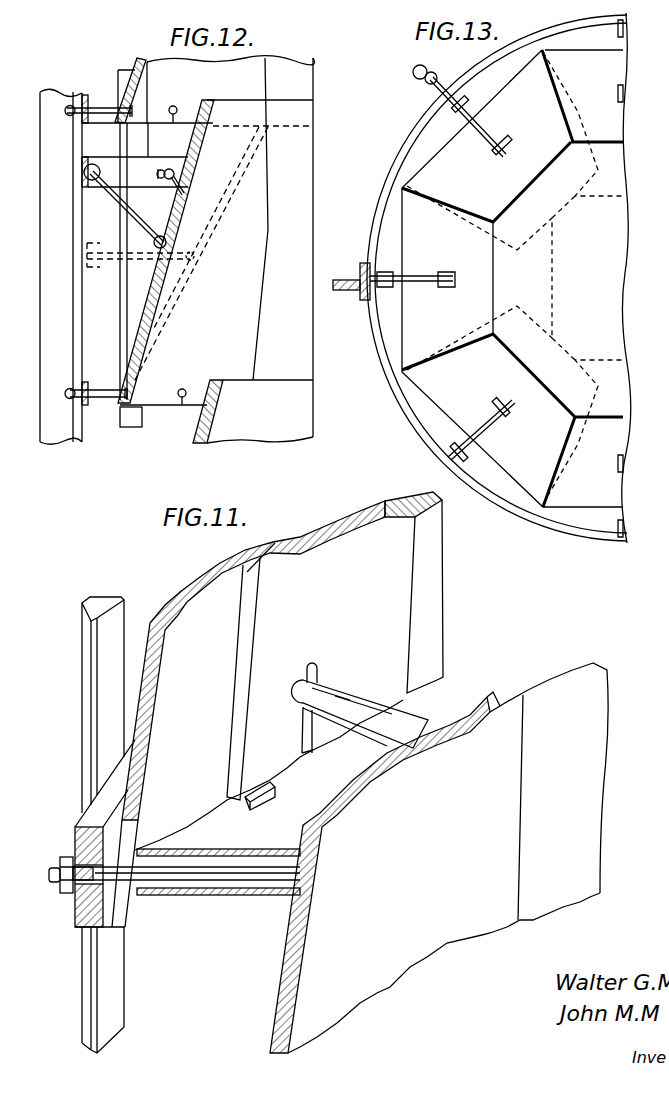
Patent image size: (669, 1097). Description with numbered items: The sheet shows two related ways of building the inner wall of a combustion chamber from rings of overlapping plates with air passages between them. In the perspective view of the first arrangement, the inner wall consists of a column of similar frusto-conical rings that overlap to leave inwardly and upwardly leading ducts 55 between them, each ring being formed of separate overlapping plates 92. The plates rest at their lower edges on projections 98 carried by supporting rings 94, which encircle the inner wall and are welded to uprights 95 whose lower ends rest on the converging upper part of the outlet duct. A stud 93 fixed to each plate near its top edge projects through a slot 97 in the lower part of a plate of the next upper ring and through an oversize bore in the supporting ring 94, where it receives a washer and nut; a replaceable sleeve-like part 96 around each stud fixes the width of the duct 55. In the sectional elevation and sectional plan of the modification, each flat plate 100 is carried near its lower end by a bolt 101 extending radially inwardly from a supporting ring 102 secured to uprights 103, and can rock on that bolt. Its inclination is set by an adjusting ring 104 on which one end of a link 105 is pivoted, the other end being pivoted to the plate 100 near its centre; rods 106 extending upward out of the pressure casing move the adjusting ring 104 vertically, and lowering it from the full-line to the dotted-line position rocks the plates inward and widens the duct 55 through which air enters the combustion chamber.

In FIG. 12, the duct 55 is at (163, 408).
In FIG. 11, the duct 55 is at (217, 903).
In FIG. 11, the plate 92 is at (262, 543).
In FIG. 11, the stud 93 is at (266, 871).
In FIG. 11, the supporting ring 94 is at (88, 913).
In FIG. 11, the upright 95 is at (83, 667).
In FIG. 11, the sleeve-like part 96 is at (168, 898).
In FIG. 11, the slot 97 is at (308, 743).
In FIG. 11, the projection 98 is at (263, 805).
In FIG. 12, the plate 100 is at (178, 232).
In FIG. 13, the plate 100 is at (583, 62).
In FIG. 12, the bolt 101 is at (107, 399).
In FIG. 12, the supporting ring 102 is at (86, 380).
In FIG. 12, the upright 103 is at (62, 294).
In FIG. 13, the upright 103 is at (351, 279).
In FIG. 12, the adjusting ring 104 is at (82, 94).
In FIG. 13, the adjusting ring 104 is at (411, 147).
In FIG. 12, the link 105 is at (121, 200).
In FIG. 12, the rod 106 is at (121, 334).
In FIG. 13, the rod 106 is at (437, 72).